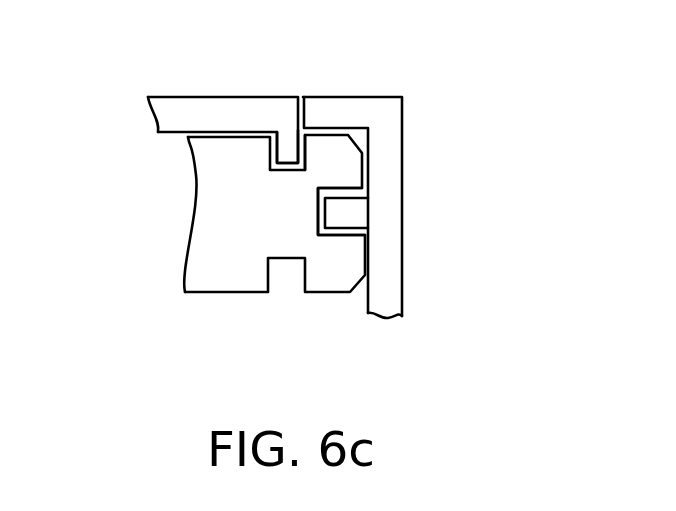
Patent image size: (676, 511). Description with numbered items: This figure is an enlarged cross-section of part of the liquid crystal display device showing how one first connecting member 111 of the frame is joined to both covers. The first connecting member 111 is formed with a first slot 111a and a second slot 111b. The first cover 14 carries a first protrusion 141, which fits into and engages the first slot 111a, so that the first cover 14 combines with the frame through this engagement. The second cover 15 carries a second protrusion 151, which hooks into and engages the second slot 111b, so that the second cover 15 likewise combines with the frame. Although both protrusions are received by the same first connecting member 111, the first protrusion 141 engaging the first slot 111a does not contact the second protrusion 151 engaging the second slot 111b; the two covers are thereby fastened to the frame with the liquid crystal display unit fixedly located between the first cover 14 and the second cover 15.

The first cover 14 is at (390, 120).
The first protrusion 141 is at (350, 220).
The second cover 15 is at (177, 113).
The second protrusion 151 is at (287, 152).
The first connecting member 111 is at (207, 261).
The first slot 111a is at (330, 236).
The second slot 111b is at (301, 162).